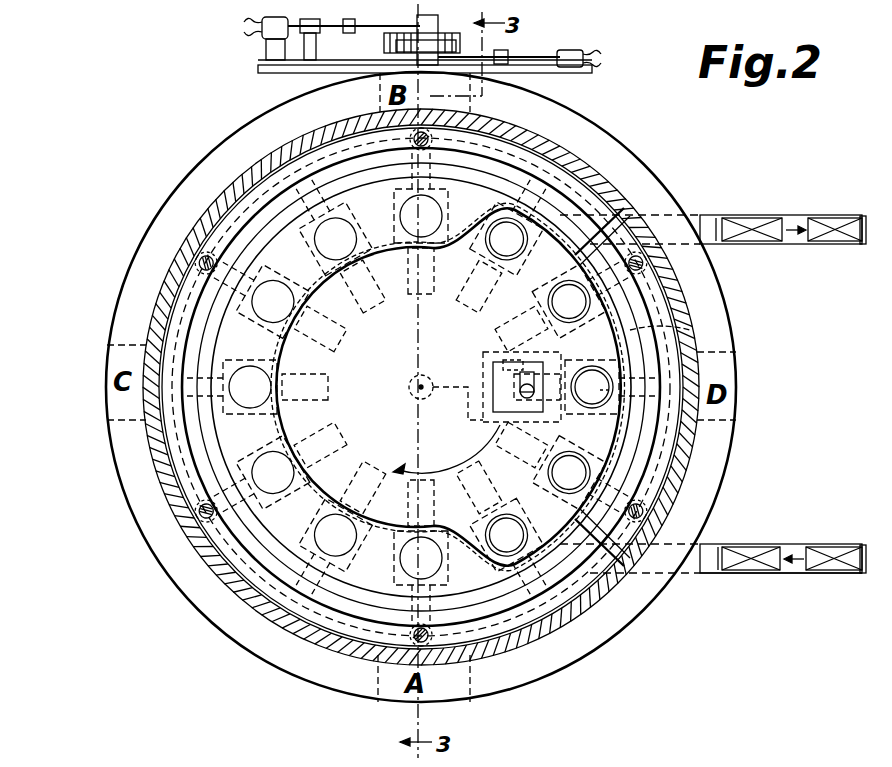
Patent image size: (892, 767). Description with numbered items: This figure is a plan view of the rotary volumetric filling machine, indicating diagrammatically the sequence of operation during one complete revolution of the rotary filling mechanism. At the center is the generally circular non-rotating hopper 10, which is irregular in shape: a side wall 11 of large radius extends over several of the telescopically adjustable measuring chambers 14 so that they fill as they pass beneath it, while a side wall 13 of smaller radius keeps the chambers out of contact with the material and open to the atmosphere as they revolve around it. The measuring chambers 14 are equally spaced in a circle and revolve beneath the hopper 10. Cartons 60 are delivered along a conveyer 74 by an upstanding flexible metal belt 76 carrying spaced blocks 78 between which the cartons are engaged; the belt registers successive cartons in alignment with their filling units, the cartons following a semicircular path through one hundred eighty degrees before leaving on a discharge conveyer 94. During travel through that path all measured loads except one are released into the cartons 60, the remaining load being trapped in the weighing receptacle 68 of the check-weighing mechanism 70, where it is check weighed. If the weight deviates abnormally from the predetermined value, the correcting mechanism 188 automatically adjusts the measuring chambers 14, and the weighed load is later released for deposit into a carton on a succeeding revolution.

The hopper 10 is at (618, 323).
The side wall 11 is at (610, 346).
The side wall 13 is at (288, 366).
The measuring chambers 14 is at (564, 386).
The cartons 60 is at (783, 371).
The weighing receptacle 68 is at (684, 327).
The check-weighing mechanism 70 is at (479, 363).
The conveyer 74 is at (794, 576).
The flexible metal belt 76 is at (750, 546).
The blocks 78 is at (708, 228).
The discharge conveyer 94 is at (828, 222).
The correcting mechanism 188 is at (540, 43).